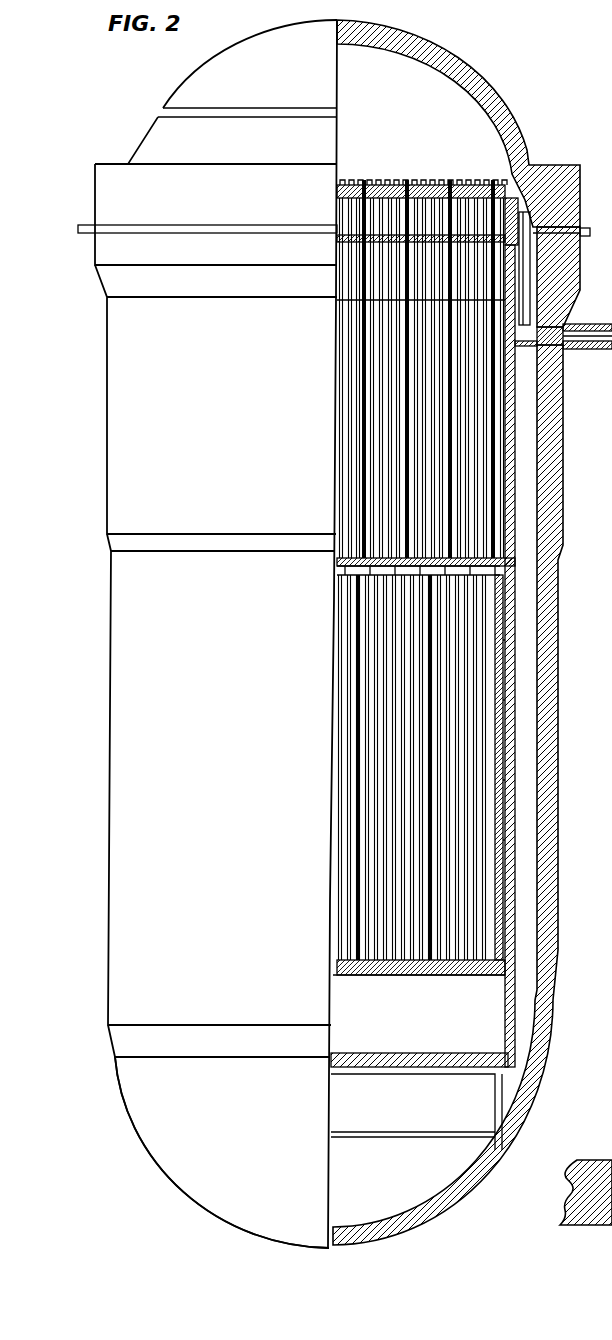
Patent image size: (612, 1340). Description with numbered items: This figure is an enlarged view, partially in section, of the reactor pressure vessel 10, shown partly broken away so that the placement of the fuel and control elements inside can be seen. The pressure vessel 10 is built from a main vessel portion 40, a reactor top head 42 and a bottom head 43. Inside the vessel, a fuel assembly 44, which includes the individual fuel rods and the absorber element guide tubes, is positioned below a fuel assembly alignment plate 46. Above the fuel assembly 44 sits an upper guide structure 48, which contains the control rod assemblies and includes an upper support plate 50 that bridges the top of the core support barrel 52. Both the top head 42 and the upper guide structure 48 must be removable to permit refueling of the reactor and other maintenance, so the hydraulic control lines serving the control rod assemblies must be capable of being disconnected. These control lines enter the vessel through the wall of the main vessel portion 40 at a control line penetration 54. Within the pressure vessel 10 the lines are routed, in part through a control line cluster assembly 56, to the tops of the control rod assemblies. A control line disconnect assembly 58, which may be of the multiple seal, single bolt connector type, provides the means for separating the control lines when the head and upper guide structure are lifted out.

The pressure vessel 10 is at (87, 449).
The main vessel portion 40 is at (242, 875).
The reactor top head 42 is at (177, 90).
The bottom head 43 is at (255, 1123).
The fuel assembly 44 is at (330, 752).
The fuel assembly alignment plate 46 is at (337, 527).
The upper guide structure 48 is at (333, 422).
The upper support plate 50 is at (337, 226).
The core support barrel 52 is at (516, 513).
The control line penetration 54 is at (548, 325).
The control line cluster assembly 56 is at (528, 262).
The control line disconnect assembly 58 is at (532, 222).